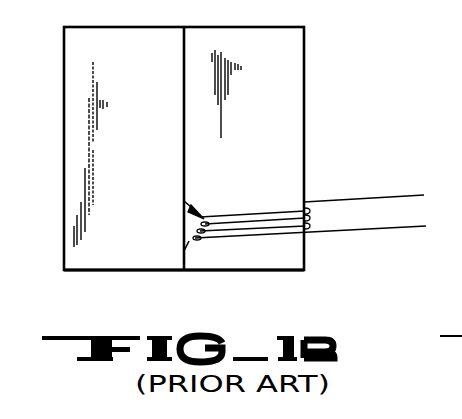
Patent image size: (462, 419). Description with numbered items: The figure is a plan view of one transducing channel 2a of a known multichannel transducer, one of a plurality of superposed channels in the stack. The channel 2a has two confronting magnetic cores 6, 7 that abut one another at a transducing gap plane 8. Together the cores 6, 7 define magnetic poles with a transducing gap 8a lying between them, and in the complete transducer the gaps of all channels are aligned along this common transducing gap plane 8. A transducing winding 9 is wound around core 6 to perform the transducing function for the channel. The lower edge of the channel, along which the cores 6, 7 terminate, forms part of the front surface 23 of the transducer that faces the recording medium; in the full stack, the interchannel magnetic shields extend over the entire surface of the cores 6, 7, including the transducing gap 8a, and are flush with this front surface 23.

The transducing channel 2a is at (287, 289).
The magnetic core 6 is at (295, 51).
The magnetic core 7 is at (77, 56).
The transducing gap plane 8 is at (184, 162).
The transducing gap 8a is at (185, 255).
The transducing winding 9 is at (233, 220).
The front surface 23 is at (128, 272).